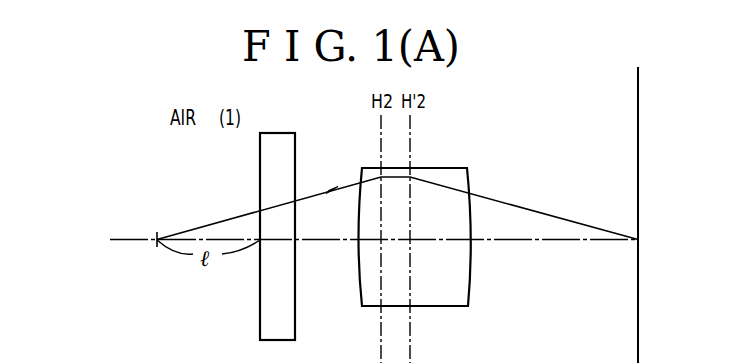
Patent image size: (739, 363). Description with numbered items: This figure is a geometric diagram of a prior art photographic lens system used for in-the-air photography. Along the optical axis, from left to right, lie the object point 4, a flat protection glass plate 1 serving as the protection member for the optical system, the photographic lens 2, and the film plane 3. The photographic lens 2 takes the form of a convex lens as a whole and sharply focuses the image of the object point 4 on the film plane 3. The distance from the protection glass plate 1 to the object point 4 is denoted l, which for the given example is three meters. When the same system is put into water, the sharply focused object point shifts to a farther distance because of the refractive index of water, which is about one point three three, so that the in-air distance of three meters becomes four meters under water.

The protection glass plate 1 is at (291, 305).
The photographic lens 2 is at (463, 287).
The film plane 3 is at (637, 303).
The object point 4 is at (157, 248).